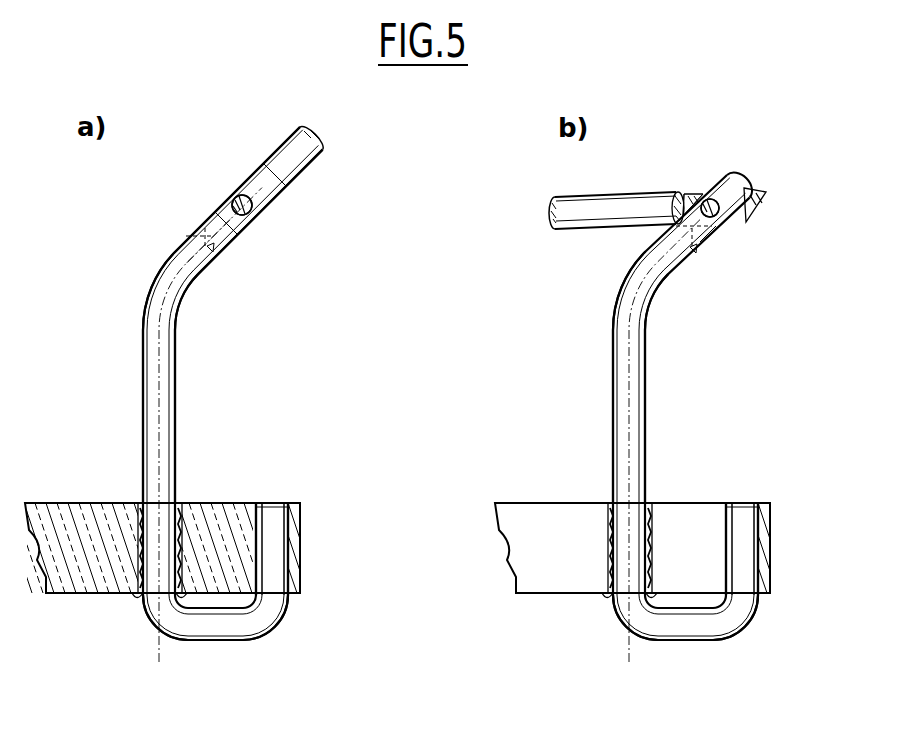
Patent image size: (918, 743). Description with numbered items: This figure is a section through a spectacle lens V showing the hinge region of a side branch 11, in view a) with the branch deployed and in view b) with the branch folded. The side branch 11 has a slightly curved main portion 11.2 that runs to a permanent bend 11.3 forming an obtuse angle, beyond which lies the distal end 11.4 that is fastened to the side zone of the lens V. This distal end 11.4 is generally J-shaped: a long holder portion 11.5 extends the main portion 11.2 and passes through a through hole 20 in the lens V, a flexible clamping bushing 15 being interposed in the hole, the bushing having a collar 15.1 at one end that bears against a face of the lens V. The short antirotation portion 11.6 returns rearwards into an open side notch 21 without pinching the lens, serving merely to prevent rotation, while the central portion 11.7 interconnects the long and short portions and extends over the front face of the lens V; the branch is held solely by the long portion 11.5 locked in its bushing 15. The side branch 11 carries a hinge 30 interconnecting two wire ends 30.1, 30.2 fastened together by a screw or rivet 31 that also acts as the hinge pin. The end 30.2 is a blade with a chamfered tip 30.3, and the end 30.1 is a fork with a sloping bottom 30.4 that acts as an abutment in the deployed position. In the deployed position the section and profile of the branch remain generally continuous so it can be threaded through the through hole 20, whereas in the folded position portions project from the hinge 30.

The side branch 11 is at (138, 357).
The main portion 11.2 is at (290, 158).
The permanent bend 11.3 is at (163, 298).
The distal end 11.4 is at (205, 642).
The long holder portion 11.5 is at (160, 428).
The short antirotation portion 11.6 is at (272, 553).
The central portion 11.7 is at (230, 622).
The flexible clamping bushing 15 is at (145, 550).
The collar 15.1 is at (133, 600).
The through hole 20 is at (140, 524).
The open side notch 21 is at (293, 507).
The lens V is at (57, 518).
The hinge 30 is at (235, 181).
The wire end 30.1 is at (230, 227).
The wire end 30.2 is at (273, 173).
The chamfered tip 30.3 is at (200, 238).
The sloping bottom 30.4 is at (217, 253).
The screw or rivet 31 is at (255, 210).